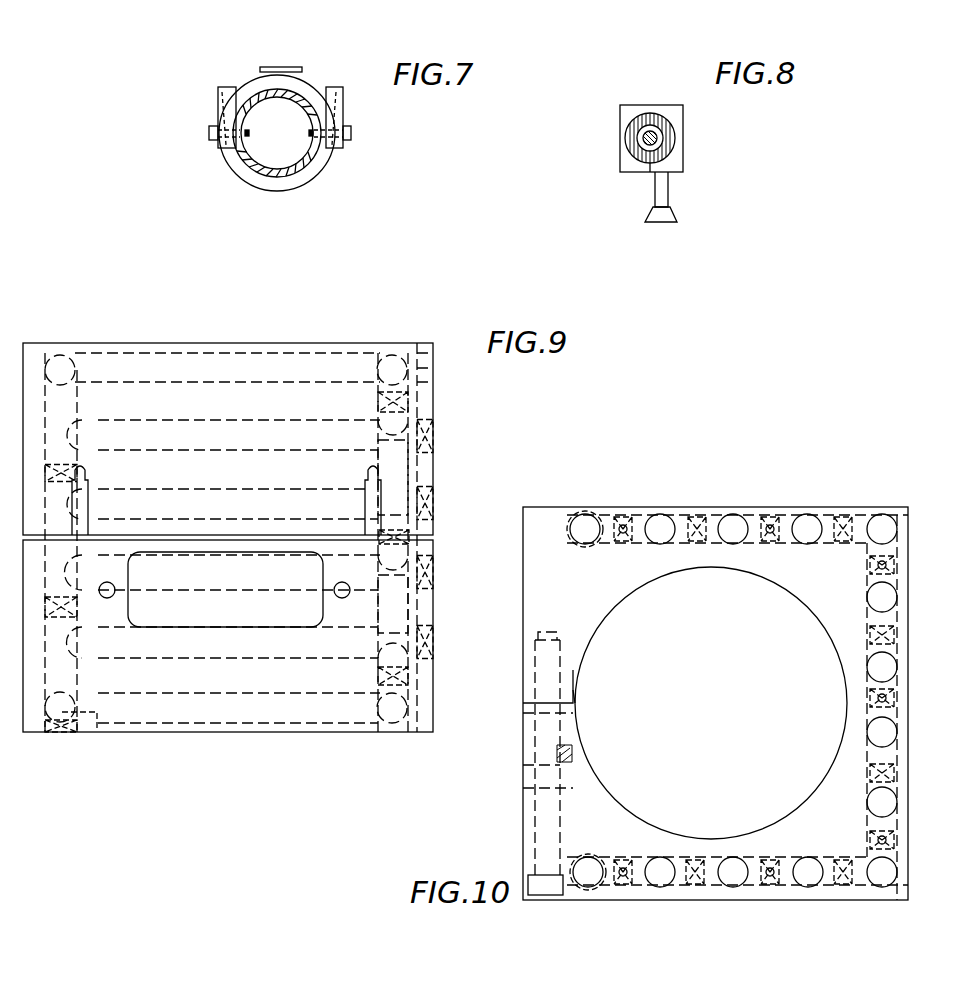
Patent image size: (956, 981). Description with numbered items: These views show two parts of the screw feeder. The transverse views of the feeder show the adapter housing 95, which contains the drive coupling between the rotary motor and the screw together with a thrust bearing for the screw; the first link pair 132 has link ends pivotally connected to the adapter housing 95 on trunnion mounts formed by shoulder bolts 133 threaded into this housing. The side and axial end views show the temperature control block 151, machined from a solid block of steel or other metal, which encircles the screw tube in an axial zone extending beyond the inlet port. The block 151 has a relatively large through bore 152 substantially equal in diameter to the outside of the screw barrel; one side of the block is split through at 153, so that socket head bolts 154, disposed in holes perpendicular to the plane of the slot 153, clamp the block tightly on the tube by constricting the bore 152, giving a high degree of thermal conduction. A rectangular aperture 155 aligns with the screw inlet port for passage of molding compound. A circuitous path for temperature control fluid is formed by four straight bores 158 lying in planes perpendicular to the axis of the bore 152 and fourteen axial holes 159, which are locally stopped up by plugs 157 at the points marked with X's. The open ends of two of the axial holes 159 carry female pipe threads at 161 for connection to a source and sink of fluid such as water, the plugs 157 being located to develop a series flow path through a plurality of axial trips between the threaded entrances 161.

In FIG. 7, the adapter housing 95 is at (253, 170).
In FIG. 7, the first link pair 132 is at (222, 97).
In FIG. 7, the shoulder bolts 133 is at (209, 135).
In FIG. 9, the temperature control block 151 is at (434, 448).
In FIG. 10, the temperature control block 151 is at (705, 503).
In FIG. 10, the through bore 152 is at (627, 598).
In FIG. 10, the split 153 is at (575, 693).
In FIG. 10, the socket head bolts 154 is at (535, 823).
In FIG. 9, the rectangular aperture 155 is at (173, 625).
In FIG. 9, the plugs 157 is at (67, 468).
In FIG. 10, the plugs 157 is at (667, 527).
In FIG. 9, the straight bores 158 is at (52, 357).
In FIG. 10, the axial holes 159 is at (655, 524).
In FIG. 10, the female pipe threads 161 is at (578, 524).